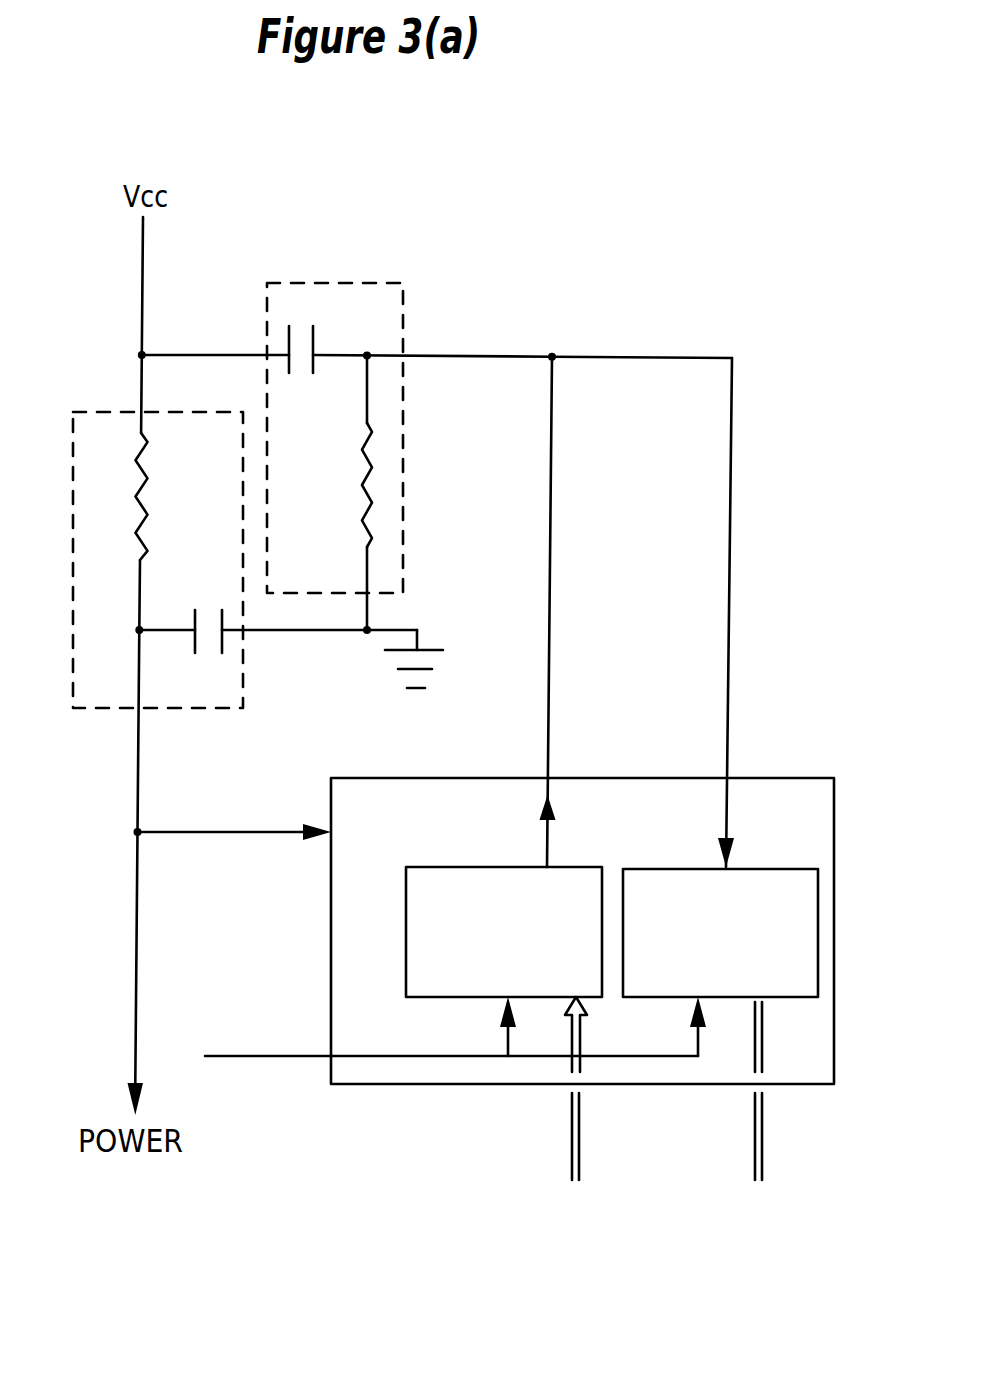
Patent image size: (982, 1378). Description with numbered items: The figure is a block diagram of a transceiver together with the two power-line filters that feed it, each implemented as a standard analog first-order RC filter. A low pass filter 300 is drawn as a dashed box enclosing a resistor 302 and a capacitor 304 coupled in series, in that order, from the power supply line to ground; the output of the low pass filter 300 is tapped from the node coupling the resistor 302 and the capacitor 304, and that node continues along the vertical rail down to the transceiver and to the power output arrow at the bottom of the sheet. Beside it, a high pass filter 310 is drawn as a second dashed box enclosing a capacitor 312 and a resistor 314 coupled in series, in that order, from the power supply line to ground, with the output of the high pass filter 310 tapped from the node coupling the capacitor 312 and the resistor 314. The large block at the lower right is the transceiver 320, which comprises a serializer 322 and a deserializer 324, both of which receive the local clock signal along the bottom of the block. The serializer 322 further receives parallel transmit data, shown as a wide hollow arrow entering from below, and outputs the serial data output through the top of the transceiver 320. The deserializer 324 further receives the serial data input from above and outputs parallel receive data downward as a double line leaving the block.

The low pass filter 300 is at (158, 542).
The resistor 302 is at (117, 496).
The capacitor 304 is at (205, 612).
The high pass filter 310 is at (335, 436).
The capacitor 312 is at (300, 331).
The resistor 314 is at (337, 492).
The transceiver 320 is at (519, 791).
The serializer 322 is at (504, 915).
The deserializer 324 is at (720, 915).